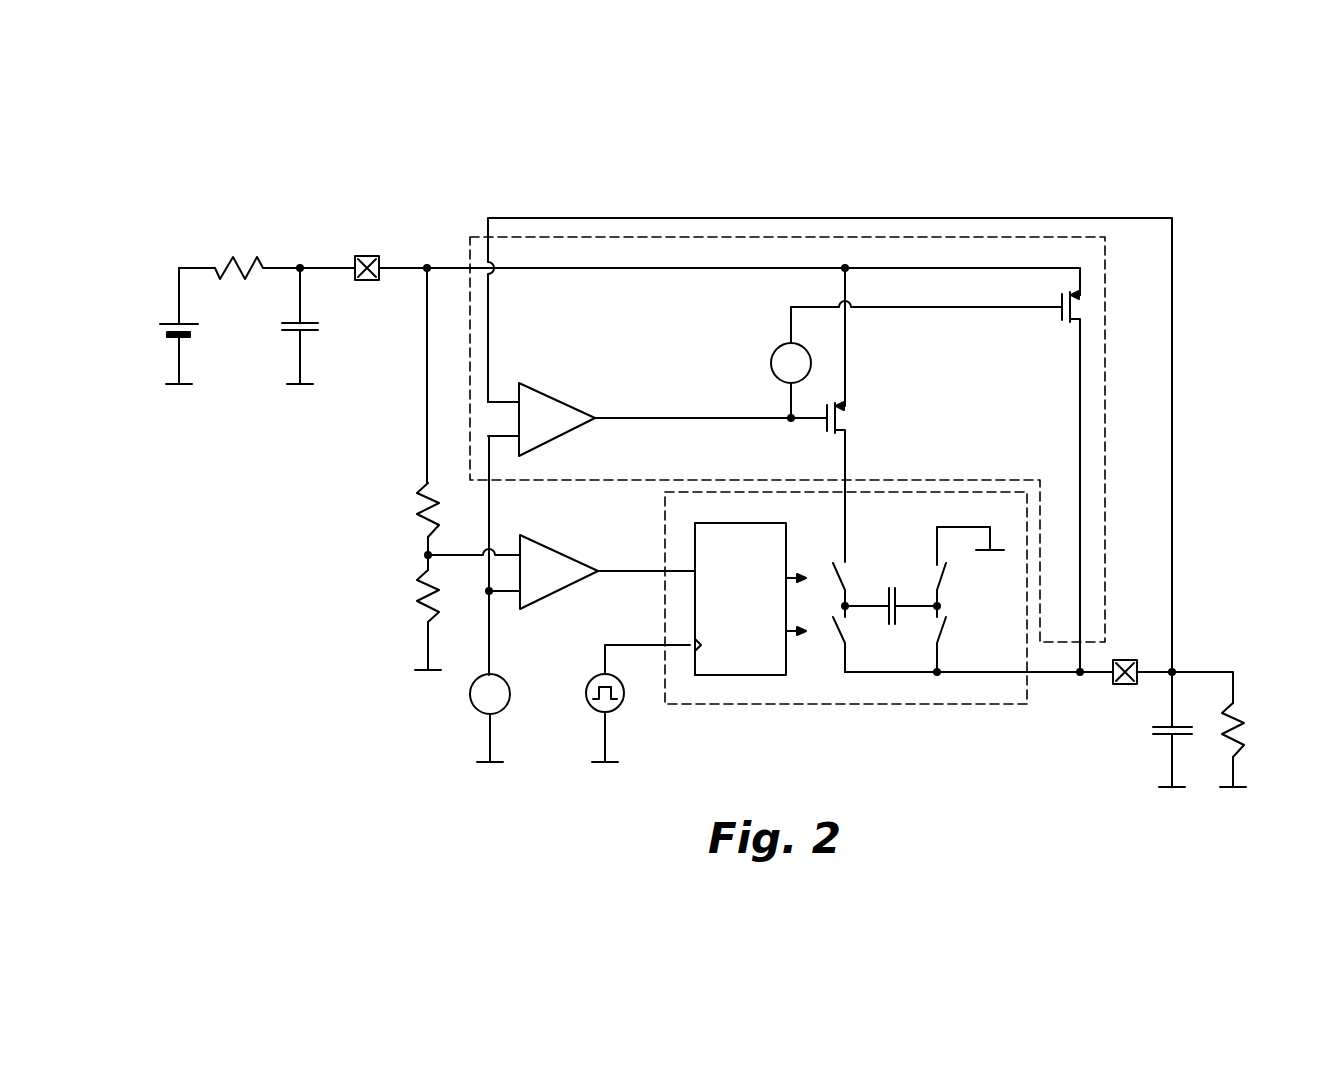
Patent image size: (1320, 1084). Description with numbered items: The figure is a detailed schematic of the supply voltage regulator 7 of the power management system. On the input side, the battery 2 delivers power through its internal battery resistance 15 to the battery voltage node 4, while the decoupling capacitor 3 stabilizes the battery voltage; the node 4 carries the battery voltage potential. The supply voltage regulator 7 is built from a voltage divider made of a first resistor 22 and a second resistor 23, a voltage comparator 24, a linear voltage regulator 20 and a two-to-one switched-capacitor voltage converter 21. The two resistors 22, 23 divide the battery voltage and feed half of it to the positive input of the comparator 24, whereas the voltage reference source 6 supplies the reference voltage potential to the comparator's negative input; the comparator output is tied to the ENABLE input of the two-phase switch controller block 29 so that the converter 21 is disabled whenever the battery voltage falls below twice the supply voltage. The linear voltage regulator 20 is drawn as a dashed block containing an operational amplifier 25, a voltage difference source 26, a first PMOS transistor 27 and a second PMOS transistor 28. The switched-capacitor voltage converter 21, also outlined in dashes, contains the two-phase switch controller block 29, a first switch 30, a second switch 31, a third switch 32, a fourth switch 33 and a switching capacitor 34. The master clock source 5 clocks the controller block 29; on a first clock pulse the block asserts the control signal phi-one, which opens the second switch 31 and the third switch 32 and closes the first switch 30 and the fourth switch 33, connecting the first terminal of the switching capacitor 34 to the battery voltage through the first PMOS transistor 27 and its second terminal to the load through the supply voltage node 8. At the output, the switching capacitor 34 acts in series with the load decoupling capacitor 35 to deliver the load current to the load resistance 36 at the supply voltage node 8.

The battery 2 is at (165, 337).
The decoupling capacitor 3 is at (295, 333).
The battery voltage node 4 is at (367, 254).
The master clock source 5 is at (587, 690).
The voltage reference source 6 is at (471, 695).
The supply voltage regulator 7 is at (800, 143).
The supply voltage node 8 is at (1125, 686).
The internal battery resistance 15 is at (243, 262).
The linear voltage regulator 20 is at (478, 237).
The 2:1 switched-capacitor voltage converter 21 is at (670, 706).
The first resistor 22 is at (415, 515).
The second resistor 23 is at (415, 602).
The voltage comparator 24 is at (565, 556).
The operational amplifier 25 is at (555, 398).
The voltage difference source 26 is at (772, 370).
The first PMOS transistor 27 is at (842, 420).
The second PMOS transistor 28 is at (1070, 323).
The two-phase switch controller block 29 is at (745, 677).
The first switch 30 is at (838, 580).
The second switch 31 is at (946, 583).
The third switch 32 is at (838, 632).
The fourth switch 33 is at (946, 624).
The switching capacitor 34 is at (893, 600).
The load decoupling capacitor 35 is at (1165, 740).
The load resistance 36 is at (1243, 755).